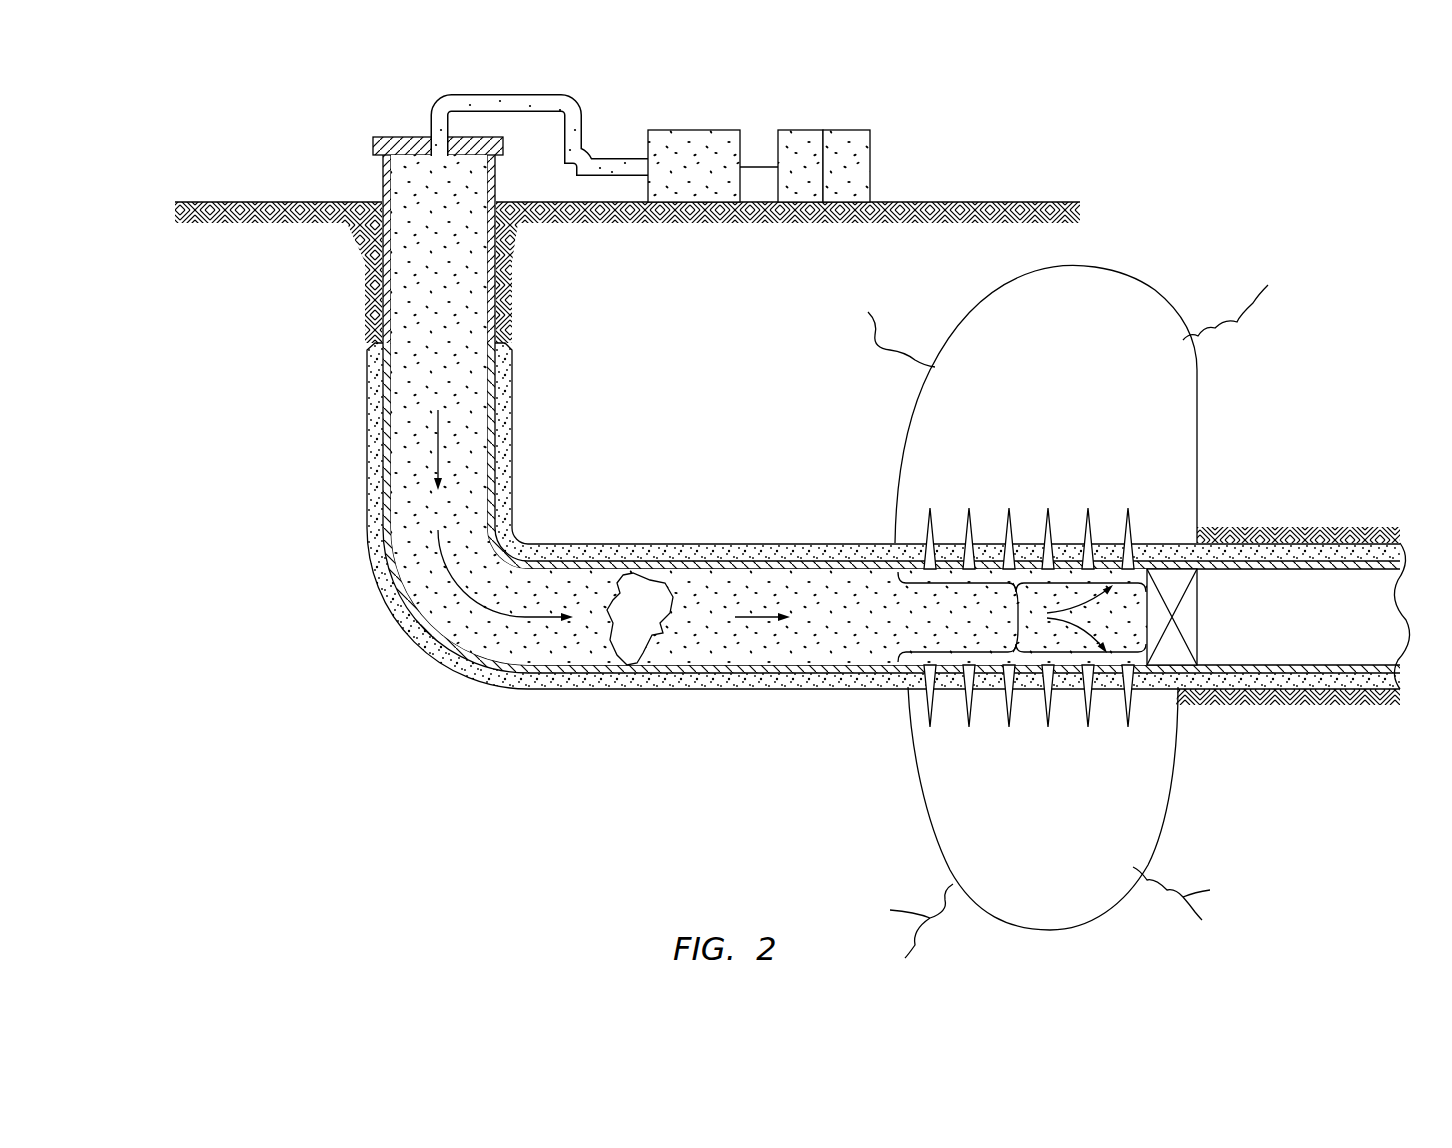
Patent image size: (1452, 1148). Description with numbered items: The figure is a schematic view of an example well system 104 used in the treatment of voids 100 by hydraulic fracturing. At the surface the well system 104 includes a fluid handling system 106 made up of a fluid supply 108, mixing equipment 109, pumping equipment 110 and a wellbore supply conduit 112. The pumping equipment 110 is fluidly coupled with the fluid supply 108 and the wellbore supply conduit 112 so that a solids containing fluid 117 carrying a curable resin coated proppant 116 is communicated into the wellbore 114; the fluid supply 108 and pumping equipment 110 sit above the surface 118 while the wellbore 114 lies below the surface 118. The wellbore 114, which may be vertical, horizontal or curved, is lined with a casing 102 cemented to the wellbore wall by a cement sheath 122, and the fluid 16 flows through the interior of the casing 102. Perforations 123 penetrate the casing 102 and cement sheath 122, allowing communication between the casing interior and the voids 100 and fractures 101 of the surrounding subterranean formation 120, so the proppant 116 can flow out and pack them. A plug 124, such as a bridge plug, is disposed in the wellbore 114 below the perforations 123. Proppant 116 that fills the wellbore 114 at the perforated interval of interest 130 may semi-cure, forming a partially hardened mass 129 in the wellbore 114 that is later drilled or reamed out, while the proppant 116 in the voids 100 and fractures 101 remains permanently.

The well system 104 is at (234, 115).
The fluid handling system 106 is at (840, 97).
The fluid supply 108 is at (852, 130).
The mixing equipment 109 is at (790, 130).
The pumping equipment 110 is at (712, 130).
The wellbore supply conduit 112 is at (538, 94).
The wellbore 114 is at (512, 490).
The curable resin coated proppant 116 is at (452, 430).
The solids containing fluid 117 is at (472, 598).
The surface 118 is at (992, 202).
The subterranean formation 120 is at (583, 278).
The cement sheath 122 is at (855, 548).
The casing 102 is at (797, 556).
The wellbore fluid 16 is at (742, 578).
The partially hardened mass 129 is at (640, 587).
The perforated interval of interest 130 is at (1013, 605).
The perforations 123 is at (1008, 517).
The plug 124 is at (1197, 585).
The voids 100 is at (1043, 335).
The fractures 101 is at (1066, 607).